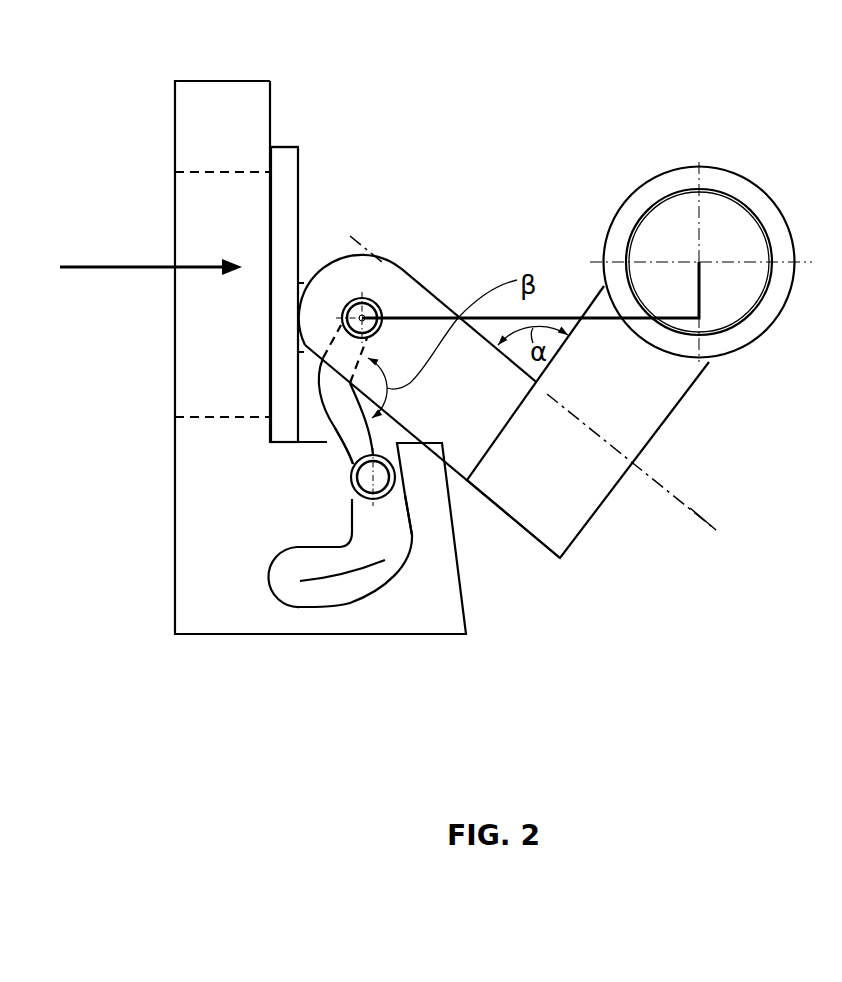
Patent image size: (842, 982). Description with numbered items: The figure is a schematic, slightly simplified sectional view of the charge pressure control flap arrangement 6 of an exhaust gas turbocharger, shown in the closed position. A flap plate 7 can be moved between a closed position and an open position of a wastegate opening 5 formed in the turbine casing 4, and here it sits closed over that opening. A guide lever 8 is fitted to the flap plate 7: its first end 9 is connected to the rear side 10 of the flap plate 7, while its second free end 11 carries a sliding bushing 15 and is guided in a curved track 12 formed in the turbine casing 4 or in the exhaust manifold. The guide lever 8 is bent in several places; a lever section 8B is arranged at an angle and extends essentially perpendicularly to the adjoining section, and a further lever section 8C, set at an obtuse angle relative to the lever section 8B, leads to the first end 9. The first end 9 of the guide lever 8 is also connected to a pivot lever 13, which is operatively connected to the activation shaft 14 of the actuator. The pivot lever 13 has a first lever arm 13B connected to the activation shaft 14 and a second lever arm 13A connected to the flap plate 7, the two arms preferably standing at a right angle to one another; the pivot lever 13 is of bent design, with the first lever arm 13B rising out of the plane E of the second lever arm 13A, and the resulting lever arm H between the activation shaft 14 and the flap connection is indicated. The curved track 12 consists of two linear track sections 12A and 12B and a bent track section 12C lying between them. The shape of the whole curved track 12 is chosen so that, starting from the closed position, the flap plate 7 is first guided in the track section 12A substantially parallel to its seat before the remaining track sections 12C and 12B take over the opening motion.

The turbine casing 4 is at (225, 95).
The wastegate opening 5 is at (195, 243).
The charge pressure control flap arrangement 6 is at (460, 222).
The flap plate 7 is at (298, 136).
The guide lever 8 is at (308, 422).
The lever section 8B is at (347, 415).
The lever section 8C is at (323, 350).
The first end 9 is at (336, 316).
The rear side 10 is at (302, 200).
The second free end 11 is at (350, 472).
The curved track 12 is at (402, 495).
The track section 12A is at (425, 566).
The track section 12B is at (298, 593).
The track section 12C is at (393, 562).
The pivot lever 13 is at (641, 490).
The second lever arm 13A is at (413, 298).
The first lever arm 13B is at (668, 400).
The activation shaft 14 is at (760, 205).
The sliding bushing 15 is at (363, 493).
The resulting lever arm H is at (707, 306).
The plane E is at (690, 508).